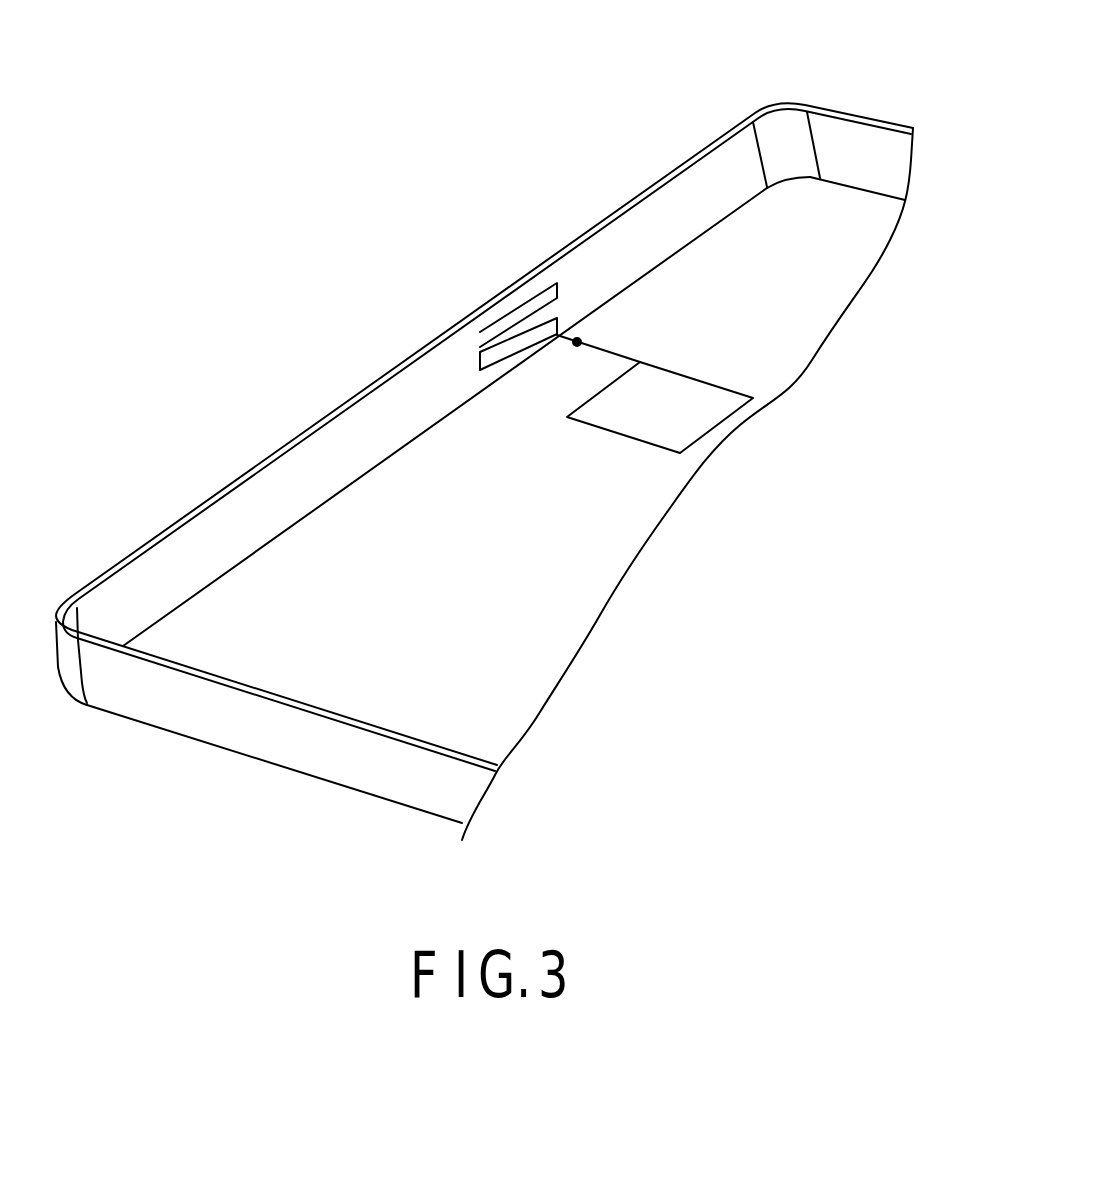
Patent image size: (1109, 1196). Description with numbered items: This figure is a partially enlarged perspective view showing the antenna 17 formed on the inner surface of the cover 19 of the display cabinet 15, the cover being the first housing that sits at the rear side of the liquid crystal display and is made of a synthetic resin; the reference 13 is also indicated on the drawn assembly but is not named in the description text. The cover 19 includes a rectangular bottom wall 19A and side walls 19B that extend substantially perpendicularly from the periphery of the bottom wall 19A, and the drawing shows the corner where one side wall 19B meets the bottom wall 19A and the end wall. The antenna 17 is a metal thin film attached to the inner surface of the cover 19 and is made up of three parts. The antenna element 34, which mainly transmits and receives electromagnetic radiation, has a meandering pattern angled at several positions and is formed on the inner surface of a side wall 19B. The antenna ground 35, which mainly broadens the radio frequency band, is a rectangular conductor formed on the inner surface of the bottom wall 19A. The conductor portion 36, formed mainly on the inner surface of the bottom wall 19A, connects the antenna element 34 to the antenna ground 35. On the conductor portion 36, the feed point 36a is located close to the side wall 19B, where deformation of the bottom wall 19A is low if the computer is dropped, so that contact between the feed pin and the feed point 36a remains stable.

The housing 13 is at (927, 100).
The display cabinet 15 is at (777, 108).
The antenna 17 is at (475, 317).
The cover 19 is at (673, 170).
The bottom wall 19A is at (847, 197).
The side wall 19B is at (642, 228).
The antenna element 34 is at (523, 303).
The antenna ground 35 is at (702, 380).
The conductor portion 36 is at (627, 353).
The feed point 36a is at (573, 346).